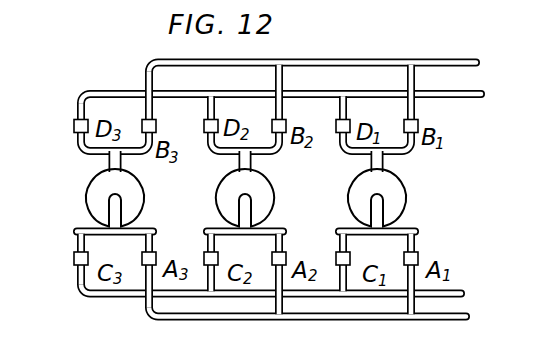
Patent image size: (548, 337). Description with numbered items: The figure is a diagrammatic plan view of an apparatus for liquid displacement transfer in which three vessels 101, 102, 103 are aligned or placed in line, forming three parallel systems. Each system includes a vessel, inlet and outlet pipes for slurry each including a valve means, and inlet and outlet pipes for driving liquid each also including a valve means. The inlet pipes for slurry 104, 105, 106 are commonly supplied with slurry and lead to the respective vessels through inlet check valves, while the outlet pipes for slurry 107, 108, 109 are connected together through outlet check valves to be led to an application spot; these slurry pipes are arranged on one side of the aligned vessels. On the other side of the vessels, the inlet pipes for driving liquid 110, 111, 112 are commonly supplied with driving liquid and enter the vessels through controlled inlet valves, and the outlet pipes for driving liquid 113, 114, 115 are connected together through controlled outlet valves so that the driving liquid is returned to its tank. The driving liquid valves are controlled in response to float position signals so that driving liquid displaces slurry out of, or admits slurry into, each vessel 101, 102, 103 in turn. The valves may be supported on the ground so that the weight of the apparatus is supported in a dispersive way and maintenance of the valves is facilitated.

The vessel 101 is at (349, 195).
The vessel 102 is at (217, 195).
The vessel 103 is at (87, 195).
The inlet pipe for slurry 104 is at (418, 104).
The inlet pipe for slurry 105 is at (279, 99).
The inlet pipe for slurry 106 is at (153, 102).
The outlet pipe for slurry 107 is at (348, 100).
The outlet pipe for slurry 108 is at (215, 99).
The outlet pipe for slurry 109 is at (76, 98).
The inlet pipe for driving liquid 110 is at (417, 242).
The inlet pipe for driving liquid 111 is at (284, 238).
The inlet pipe for driving liquid 112 is at (154, 243).
The outlet pipe for driving liquid 113 is at (349, 238).
The outlet pipe for driving liquid 114 is at (217, 238).
The outlet pipe for driving liquid 115 is at (87, 238).